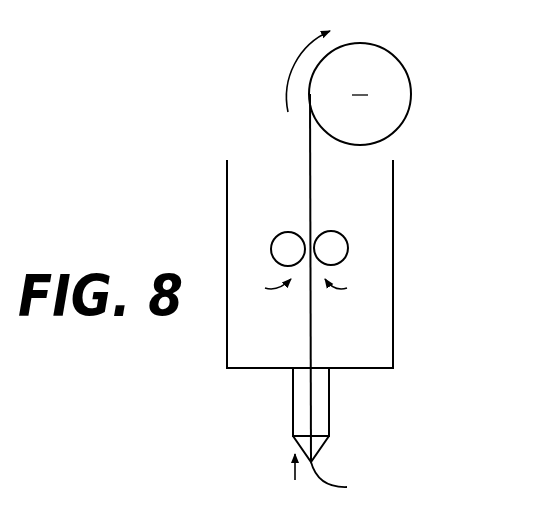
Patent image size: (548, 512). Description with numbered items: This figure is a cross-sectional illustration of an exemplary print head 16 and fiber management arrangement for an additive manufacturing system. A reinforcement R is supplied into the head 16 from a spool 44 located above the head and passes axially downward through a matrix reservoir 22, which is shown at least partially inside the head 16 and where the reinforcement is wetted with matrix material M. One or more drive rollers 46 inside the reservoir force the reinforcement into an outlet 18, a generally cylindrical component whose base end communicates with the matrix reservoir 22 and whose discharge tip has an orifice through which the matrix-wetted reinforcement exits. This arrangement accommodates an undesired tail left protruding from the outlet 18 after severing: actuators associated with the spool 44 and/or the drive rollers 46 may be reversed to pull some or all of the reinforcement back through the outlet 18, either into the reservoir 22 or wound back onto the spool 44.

The head 16 is at (349, 259).
The outlet 18 is at (329, 403).
The matrix reservoir 22 is at (253, 187).
The spool 44 is at (371, 125).
The drive rollers 46 is at (343, 260).